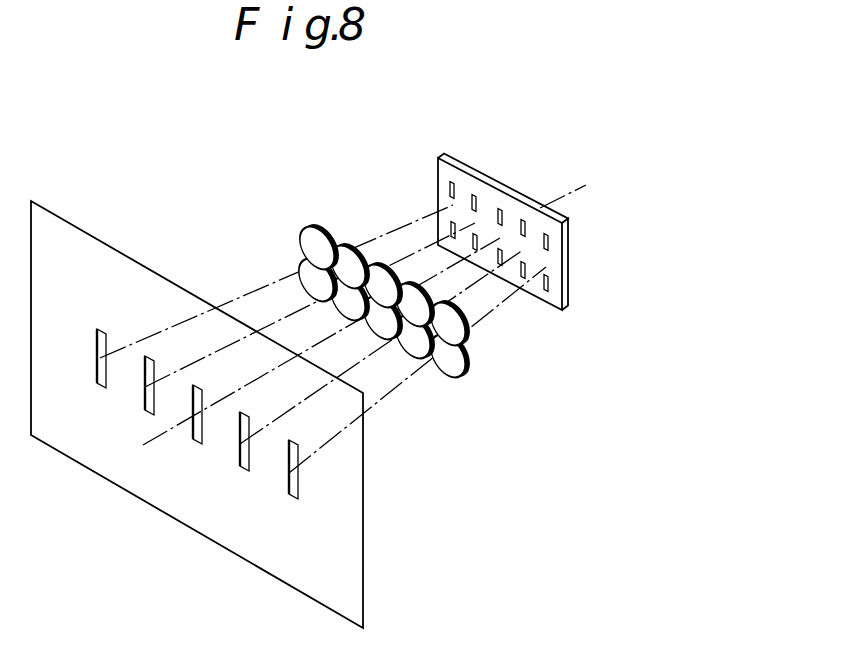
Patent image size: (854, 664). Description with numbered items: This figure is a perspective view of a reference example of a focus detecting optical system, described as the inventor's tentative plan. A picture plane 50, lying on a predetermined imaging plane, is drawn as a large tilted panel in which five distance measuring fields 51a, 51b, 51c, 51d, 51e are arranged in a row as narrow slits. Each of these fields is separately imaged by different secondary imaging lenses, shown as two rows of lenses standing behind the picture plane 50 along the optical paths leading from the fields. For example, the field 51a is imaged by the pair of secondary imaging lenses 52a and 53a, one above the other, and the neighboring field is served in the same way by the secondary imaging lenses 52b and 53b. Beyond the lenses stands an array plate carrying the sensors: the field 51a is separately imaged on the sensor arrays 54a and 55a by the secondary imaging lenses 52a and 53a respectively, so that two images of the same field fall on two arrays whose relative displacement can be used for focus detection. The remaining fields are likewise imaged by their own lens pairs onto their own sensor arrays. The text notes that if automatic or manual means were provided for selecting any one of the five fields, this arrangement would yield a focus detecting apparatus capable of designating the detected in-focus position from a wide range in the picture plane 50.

The picture plane 50 is at (363, 545).
The distance measuring field 51a is at (96, 385).
The distance measuring field 51b is at (145, 413).
The distance measuring field 51c is at (194, 442).
The distance measuring field 51d is at (243, 468).
The distance measuring field 51e is at (289, 497).
The secondary imaging lens 52a is at (312, 242).
The secondary imaging lens 52b is at (352, 260).
The secondary imaging lens 53a is at (308, 267).
The secondary imaging lens 53b is at (350, 307).
The sensor array 54a is at (455, 188).
The sensor array 55a is at (448, 223).